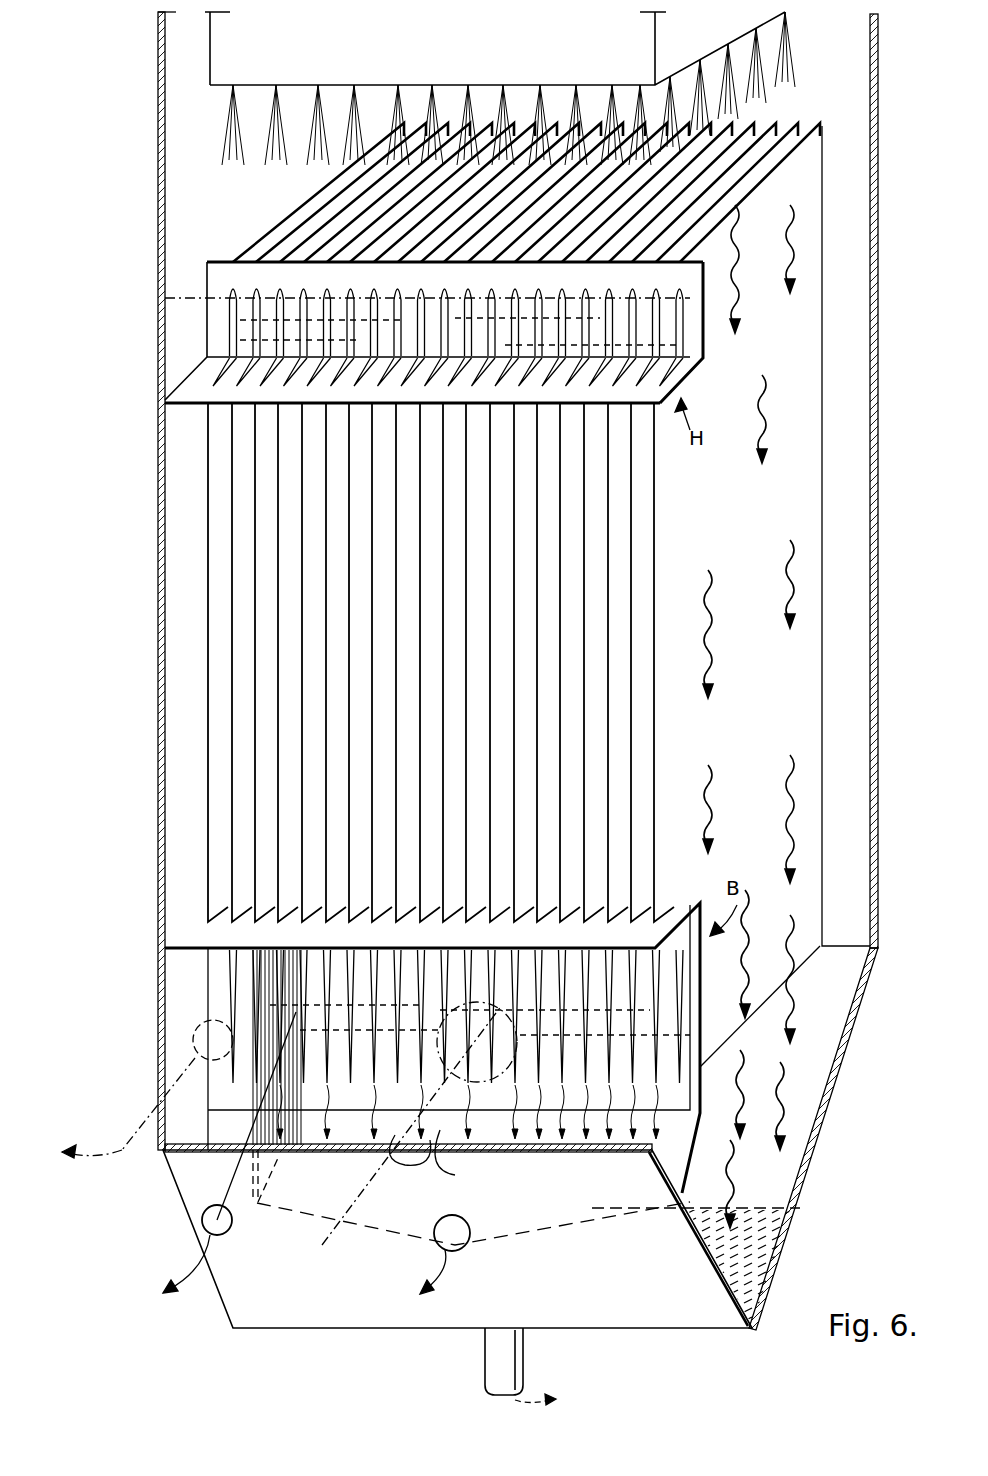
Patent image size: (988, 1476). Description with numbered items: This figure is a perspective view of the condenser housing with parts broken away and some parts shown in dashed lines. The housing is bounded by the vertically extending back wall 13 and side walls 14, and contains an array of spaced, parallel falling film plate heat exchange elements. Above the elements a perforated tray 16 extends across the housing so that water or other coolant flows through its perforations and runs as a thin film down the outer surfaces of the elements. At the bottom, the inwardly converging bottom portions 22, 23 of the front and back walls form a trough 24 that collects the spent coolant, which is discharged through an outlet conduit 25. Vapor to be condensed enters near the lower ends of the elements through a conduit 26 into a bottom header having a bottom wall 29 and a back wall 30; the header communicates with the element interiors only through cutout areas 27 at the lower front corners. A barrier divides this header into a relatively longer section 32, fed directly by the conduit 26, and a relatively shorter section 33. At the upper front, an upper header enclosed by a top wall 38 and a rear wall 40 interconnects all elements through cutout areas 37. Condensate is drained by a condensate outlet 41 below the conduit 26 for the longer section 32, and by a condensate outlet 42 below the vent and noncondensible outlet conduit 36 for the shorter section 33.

The back wall 13 is at (878, 530).
The side walls 14 is at (158, 711).
The perforated tray 16 is at (485, 84).
The bottom portion of front wall 22 is at (706, 1245).
The bottom portion of back wall 23 is at (820, 1180).
The trough 24 is at (812, 1236).
The outlet conduit 25 is at (490, 1352).
The conduit 26 is at (462, 1176).
The cutout area 27 is at (566, 1117).
The bottom wall 29 is at (700, 1157).
The back wall 30 is at (210, 992).
The longer section 32 is at (572, 1233).
The shorter section 33 is at (200, 1200).
The vent and noncondensible outlet conduit 36 is at (190, 397).
The cutout or unjoined areas 37 is at (492, 296).
The top wall 38 is at (205, 280).
The rear wall 40 is at (700, 350).
The condensate outlet 41 is at (463, 1250).
The condensate outlet 42 is at (210, 1221).